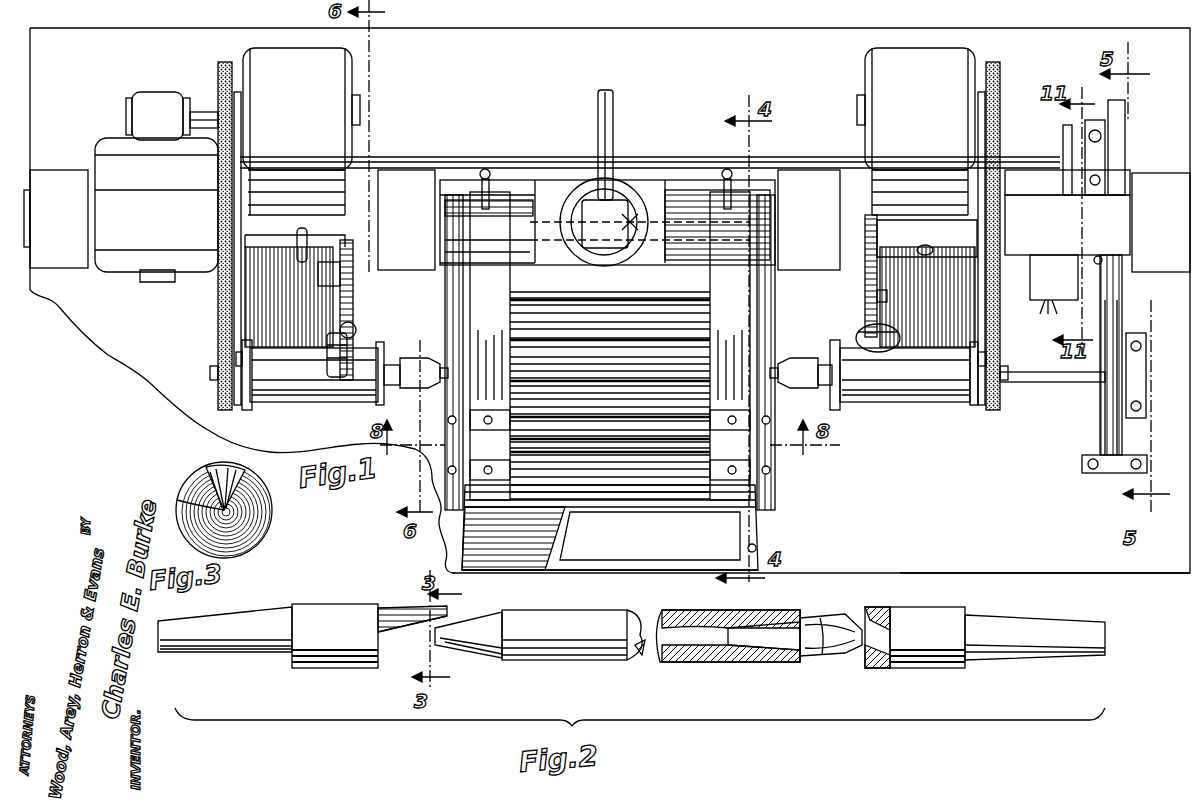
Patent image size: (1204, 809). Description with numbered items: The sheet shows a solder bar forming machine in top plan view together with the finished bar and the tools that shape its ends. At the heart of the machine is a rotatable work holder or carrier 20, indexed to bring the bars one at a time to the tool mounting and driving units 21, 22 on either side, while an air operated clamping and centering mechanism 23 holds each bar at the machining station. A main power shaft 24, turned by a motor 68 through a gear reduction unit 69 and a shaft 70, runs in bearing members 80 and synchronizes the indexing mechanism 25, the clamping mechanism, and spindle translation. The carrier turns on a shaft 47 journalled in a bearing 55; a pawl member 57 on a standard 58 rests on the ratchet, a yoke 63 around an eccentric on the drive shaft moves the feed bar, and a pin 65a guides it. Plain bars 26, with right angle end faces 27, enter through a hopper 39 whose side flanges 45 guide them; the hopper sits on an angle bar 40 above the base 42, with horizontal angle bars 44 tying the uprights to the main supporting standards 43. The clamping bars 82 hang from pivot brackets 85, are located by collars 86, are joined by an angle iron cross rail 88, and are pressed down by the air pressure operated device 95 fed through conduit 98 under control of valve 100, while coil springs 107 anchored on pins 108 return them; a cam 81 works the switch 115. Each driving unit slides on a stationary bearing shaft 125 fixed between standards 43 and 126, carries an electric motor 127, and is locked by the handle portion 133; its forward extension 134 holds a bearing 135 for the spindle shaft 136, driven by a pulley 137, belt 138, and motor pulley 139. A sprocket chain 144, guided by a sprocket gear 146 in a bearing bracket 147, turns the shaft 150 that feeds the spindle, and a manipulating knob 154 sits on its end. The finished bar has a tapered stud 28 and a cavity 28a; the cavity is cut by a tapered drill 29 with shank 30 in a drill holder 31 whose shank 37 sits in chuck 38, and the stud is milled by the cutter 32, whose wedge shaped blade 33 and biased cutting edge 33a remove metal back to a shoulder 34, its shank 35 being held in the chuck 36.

In FIG. 1, the rotatable work holder or carrier 20 is at (690, 350).
In FIG. 1, the tool mounting and driving unit 21 is at (285, 394).
In FIG. 1, the tool mounting and driving unit 22 is at (950, 394).
In FIG. 1, the air operated clamping and centering mechanism 23 is at (682, 195).
In FIG. 1, the main power shaft 24 is at (455, 156).
In FIG. 1, the work carrier indexing mechanism 25 is at (1115, 305).
In FIG. 1, the solder bar 26 is at (640, 505).
In FIG. 2, the solder bar 26 is at (718, 660).
In FIG. 1, the right angle end face 27 is at (480, 508).
In FIG. 2, the right angle end face 27 is at (803, 614).
In FIG. 2, the male member or stud 28 is at (472, 642).
In FIG. 2, the female portion or cavity 28a is at (785, 656).
In FIG. 2, the drill 29 is at (840, 630).
In FIG. 2, the shank 30 is at (890, 620).
In FIG. 2, the drill holder 31 is at (945, 614).
In FIG. 3, the cutter 32 is at (190, 488).
In FIG. 2, the cutter 32 is at (325, 605).
In FIG. 3, the blade 33 is at (205, 470).
In FIG. 2, the blade 33 is at (392, 610).
In FIG. 3, the longitudinal cutting edge 33a is at (182, 505).
In FIG. 2, the longitudinal cutting edge 33a is at (403, 633).
In FIG. 2, the shoulder 34 is at (505, 626).
In FIG. 2, the shank 35 is at (220, 620).
In FIG. 1, the chuck 36 is at (420, 357).
In FIG. 2, the shank 37 is at (1010, 630).
In FIG. 1, the chuck 38 is at (808, 360).
In FIG. 1, the hopper 39 is at (650, 558).
In FIG. 1, the angle bar 40 is at (762, 491).
In FIG. 1, the base 42 is at (1130, 568).
In FIG. 1, the main supporting standard 43 is at (402, 172).
In FIG. 1, the horizontal angle bar 44 is at (445, 291).
In FIG. 1, the side flange 45 is at (760, 551).
In FIG. 1, the shaft 47 is at (1068, 384).
In FIG. 1, the bearing 55 is at (1146, 368).
In FIG. 1, the pawl member 57 is at (1102, 429).
In FIG. 1, the standard 58 is at (1090, 474).
In FIG. 1, the yoke 63 is at (1118, 122).
In FIG. 1, the pin 65a is at (1095, 261).
In FIG. 1, the motor 68 is at (100, 165).
In FIG. 1, the gear reduction unit 69 is at (145, 98).
In FIG. 1, the shaft 70 is at (197, 112).
In FIG. 1, the bearing member 80 is at (1097, 120).
In FIG. 1, the cam 81 is at (1063, 135).
In FIG. 1, the bar 82 is at (610, 346).
In FIG. 1, the pivot bracket 85 is at (468, 423).
In FIG. 1, the collar 86 is at (760, 448).
In FIG. 1, the angle iron cross rail 88 is at (490, 240).
In FIG. 1, the air pressure operated device 95 is at (628, 196).
In FIG. 1, the conduit 98 is at (598, 118).
In FIG. 1, the valve 100 is at (592, 236).
In FIG. 1, the coil spring 107 is at (488, 176).
In FIG. 1, the pin 108 is at (495, 186).
In FIG. 1, the switch 115 is at (1040, 300).
In FIG. 1, the stationary bearing shaft 125 is at (110, 270).
In FIG. 1, the outwardly disposed standard 126 is at (60, 268).
In FIG. 1, the electric motor 127 is at (352, 71).
In FIG. 1, the handle portion 133 is at (300, 246).
In FIG. 1, the forward extension 134 is at (265, 316).
In FIG. 1, the bearing 135 is at (325, 394).
In FIG. 1, the spindle shaft 136 is at (212, 372).
In FIG. 1, the pulley 137 is at (215, 357).
In FIG. 1, the belt 138 is at (218, 295).
In FIG. 1, the motor pulley 139 is at (222, 68).
In FIG. 1, the sprocket chain 144 is at (862, 266).
In FIG. 1, the sprocket gear 146 is at (864, 294).
In FIG. 1, the bearing bracket 147 is at (340, 276).
In FIG. 1, the shaft 150 is at (330, 350).
In FIG. 1, the manipulating knob 154 is at (356, 330).